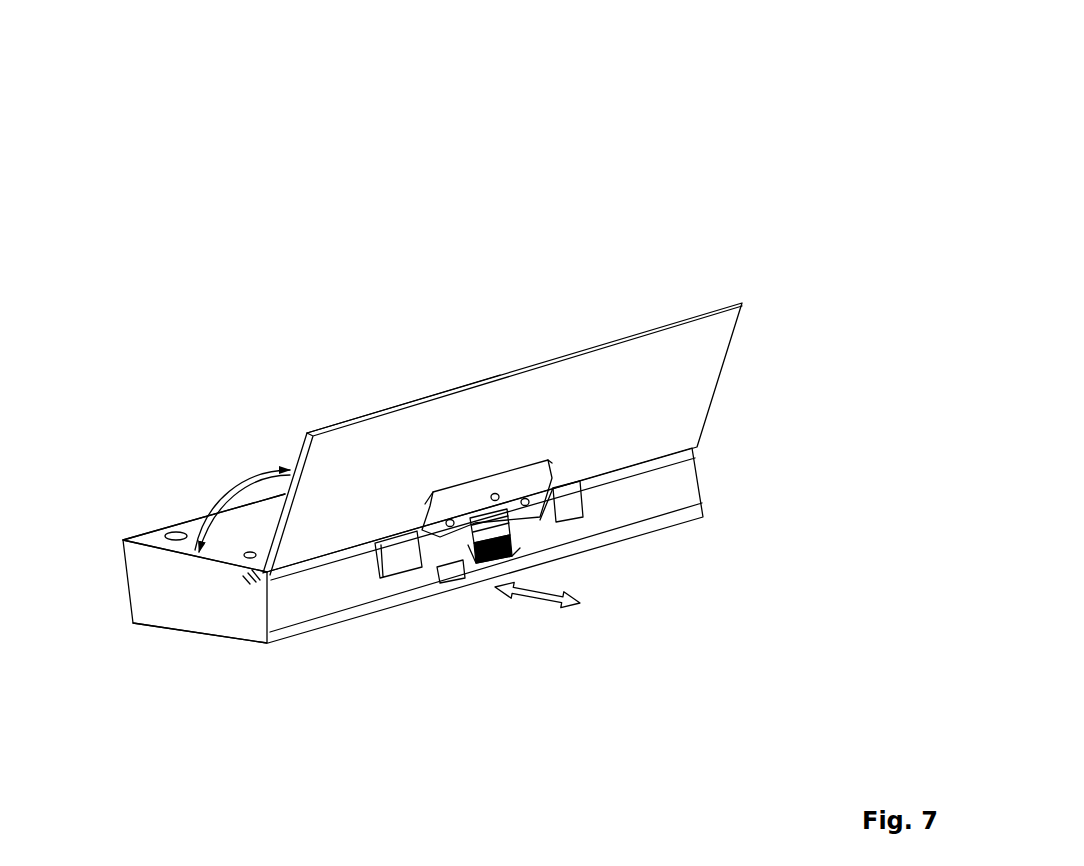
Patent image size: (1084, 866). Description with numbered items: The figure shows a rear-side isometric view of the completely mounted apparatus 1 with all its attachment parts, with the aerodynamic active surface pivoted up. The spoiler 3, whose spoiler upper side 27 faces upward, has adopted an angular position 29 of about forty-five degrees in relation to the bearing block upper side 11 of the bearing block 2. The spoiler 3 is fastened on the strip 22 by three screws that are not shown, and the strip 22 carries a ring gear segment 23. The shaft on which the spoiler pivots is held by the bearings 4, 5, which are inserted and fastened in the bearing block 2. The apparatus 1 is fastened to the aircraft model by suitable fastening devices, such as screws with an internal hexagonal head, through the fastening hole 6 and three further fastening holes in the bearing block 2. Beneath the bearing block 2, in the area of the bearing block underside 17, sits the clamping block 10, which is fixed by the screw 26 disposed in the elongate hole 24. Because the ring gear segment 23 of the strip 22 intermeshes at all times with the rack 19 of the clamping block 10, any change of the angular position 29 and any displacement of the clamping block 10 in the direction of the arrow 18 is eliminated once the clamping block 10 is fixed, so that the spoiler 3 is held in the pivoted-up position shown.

The apparatus 1 is at (466, 79).
The bearing block 2 is at (140, 570).
The spoiler 3 is at (701, 328).
The bearing 4 is at (397, 560).
The bearing 5 is at (557, 504).
The fastening hole 6 is at (177, 532).
The clamping block 10 is at (533, 542).
The bearing block upper side 11 is at (147, 532).
The bearing block underside 17 is at (198, 637).
The arrow 18 is at (582, 601).
The rack 19 is at (512, 556).
The strip 22 is at (467, 488).
The ring gear segment 23 is at (490, 530).
The elongate hole 24 is at (467, 573).
The screw 26 is at (440, 577).
The spoiler upper side 27 is at (346, 419).
The angular position 29 is at (240, 478).